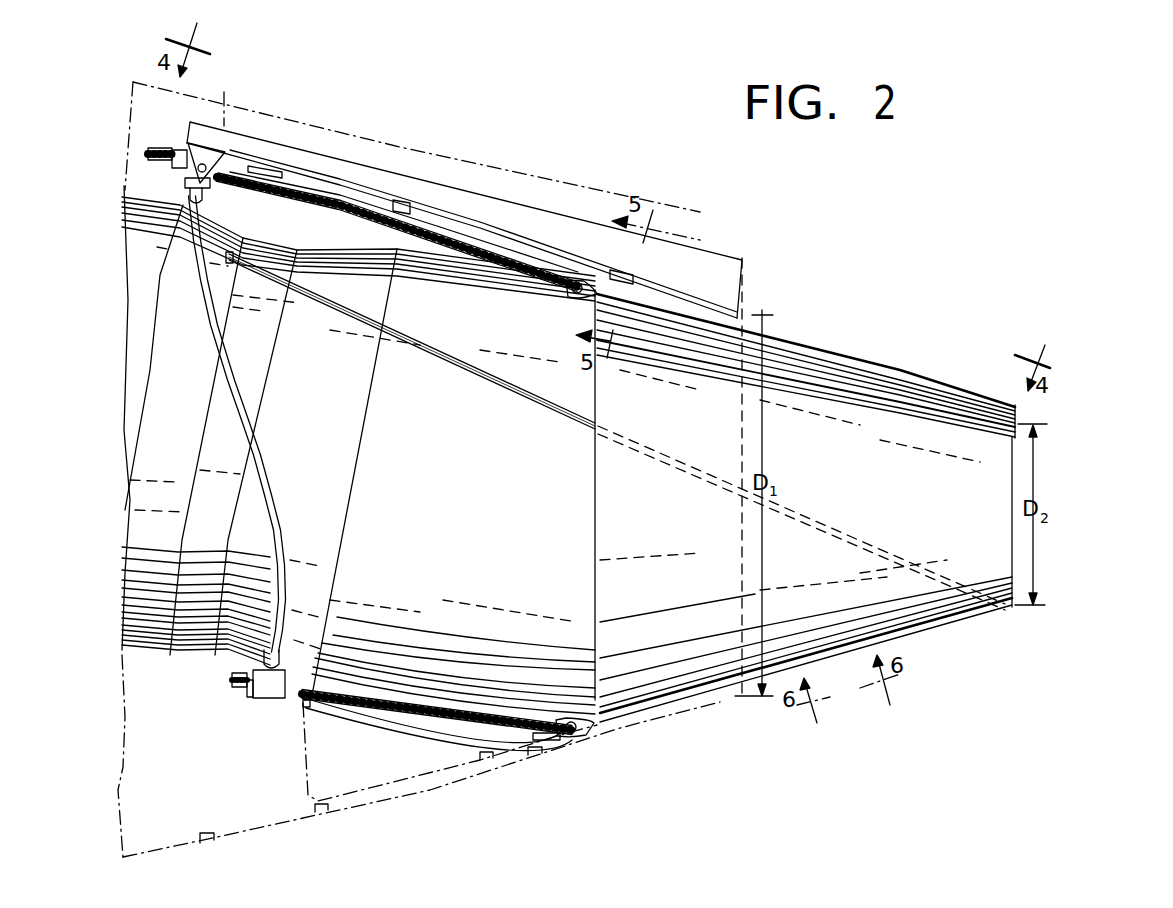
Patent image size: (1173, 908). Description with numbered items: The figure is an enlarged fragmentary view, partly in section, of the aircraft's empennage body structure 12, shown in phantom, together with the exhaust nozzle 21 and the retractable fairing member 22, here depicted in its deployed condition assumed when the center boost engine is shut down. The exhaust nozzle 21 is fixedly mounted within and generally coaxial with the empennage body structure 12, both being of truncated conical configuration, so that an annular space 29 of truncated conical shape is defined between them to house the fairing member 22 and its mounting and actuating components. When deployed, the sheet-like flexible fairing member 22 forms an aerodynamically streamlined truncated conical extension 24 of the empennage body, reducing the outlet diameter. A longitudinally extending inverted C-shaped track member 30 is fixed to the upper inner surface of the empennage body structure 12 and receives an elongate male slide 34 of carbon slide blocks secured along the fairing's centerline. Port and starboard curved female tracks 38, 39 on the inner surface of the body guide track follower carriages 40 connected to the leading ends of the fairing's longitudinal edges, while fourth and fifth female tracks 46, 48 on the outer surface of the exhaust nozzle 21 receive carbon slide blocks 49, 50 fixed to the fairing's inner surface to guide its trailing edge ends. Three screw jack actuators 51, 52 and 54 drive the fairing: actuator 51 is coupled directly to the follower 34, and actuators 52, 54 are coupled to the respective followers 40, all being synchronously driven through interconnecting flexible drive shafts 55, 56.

The empennage body structure 12 is at (525, 182).
The exhaust nozzle 21 is at (435, 512).
The fairing member 22 is at (627, 512).
The truncated conical extension 24 is at (933, 613).
The annular space 29 is at (746, 328).
The track member 30 is at (677, 310).
The male slide 34 is at (908, 372).
The port curved female track 38 is at (437, 744).
The starboard curved female track 39 is at (362, 723).
The track follower carriage 40 is at (578, 738).
The fourth female track 46 is at (410, 340).
The fifth female track 48 is at (418, 345).
The carbon slide blocks 49 is at (801, 518).
The carbon slide blocks 50 is at (793, 522).
The screw jack actuator 51 is at (204, 195).
The screw jack actuator 52 is at (222, 706).
The screw jack actuator 54 is at (256, 700).
The flexible drive shaft 55 is at (276, 424).
The flexible drive shaft 56 is at (260, 462).